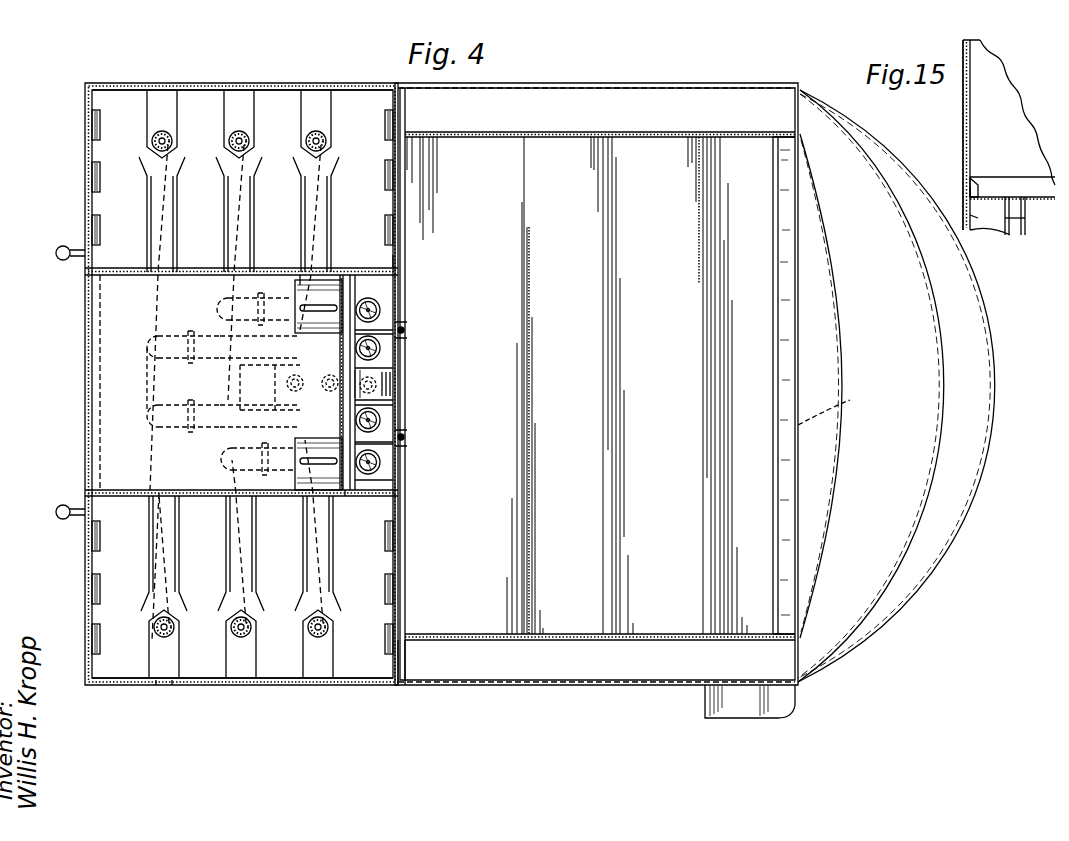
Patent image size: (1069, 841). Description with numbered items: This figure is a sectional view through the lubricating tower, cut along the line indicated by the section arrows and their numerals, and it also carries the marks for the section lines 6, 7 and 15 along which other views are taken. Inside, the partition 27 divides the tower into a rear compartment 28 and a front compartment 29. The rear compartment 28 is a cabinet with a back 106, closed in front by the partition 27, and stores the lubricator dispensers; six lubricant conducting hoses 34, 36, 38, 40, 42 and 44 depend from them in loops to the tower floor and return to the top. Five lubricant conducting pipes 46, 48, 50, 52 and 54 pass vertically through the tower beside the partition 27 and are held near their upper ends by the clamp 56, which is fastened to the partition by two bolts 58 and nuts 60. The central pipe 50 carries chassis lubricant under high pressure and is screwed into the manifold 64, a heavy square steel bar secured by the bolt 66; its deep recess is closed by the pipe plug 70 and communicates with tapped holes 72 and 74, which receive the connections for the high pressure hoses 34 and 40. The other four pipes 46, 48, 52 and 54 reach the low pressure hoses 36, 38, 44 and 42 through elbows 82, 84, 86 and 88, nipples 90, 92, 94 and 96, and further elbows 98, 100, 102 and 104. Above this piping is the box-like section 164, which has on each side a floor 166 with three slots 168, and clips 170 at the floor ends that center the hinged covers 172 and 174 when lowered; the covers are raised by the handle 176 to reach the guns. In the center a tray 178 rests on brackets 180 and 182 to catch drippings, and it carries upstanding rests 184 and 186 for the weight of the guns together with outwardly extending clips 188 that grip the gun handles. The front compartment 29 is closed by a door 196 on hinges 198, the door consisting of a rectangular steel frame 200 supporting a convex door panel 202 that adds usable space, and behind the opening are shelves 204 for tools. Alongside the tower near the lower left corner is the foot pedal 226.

In FIG. 4, the section line 6- 6 is at (251, 735).
In FIG. 4, the section line 7- 7 is at (500, 385).
In FIG. 4, the section line 15- 15 is at (140, 175).
In FIG. 4, the partition 27 is at (403, 262).
In FIG. 4, the rear compartment 28 is at (365, 685).
In FIG. 4, the front compartment 29 is at (460, 680).
In FIG. 4, the lubricant conducting hose 34 is at (325, 137).
In FIG. 4, the lubricant conducting hose 36 is at (248, 137).
In FIG. 4, the lubricant conducting hose 38 is at (172, 137).
In FIG. 4, the lubricant conducting hose 40 is at (309, 630).
In FIG. 4, the lubricant conducting hose 42 is at (232, 630).
In FIG. 4, the lubricant conducting hose 44 is at (155, 630).
In FIG. 4, the lubricant conducting pipe 46 is at (403, 297).
In FIG. 4, the lubricant conducting pipe 48 is at (406, 349).
In FIG. 4, the central pipe 50 is at (406, 422).
In FIG. 4, the lubricant conducting pipe 52 is at (406, 436).
In FIG. 4, the lubricant conducting pipe 54 is at (406, 468).
In FIG. 4, the clamp 56 is at (403, 384).
In FIG. 4, the bolt 58 is at (406, 331).
In FIG. 4, the nut 60 is at (405, 328).
In FIG. 4, the manifold 64 is at (385, 374).
In FIG. 4, the bolt 66 is at (395, 395).
In FIG. 4, the pipe plug 70 is at (271, 395).
In FIG. 4, the tapped hole 72 is at (304, 400).
In FIG. 4, the tapped hole 74 is at (338, 401).
In FIG. 4, the elbow 82 is at (380, 308).
In FIG. 4, the elbow 84 is at (380, 346).
In FIG. 4, the elbow 86 is at (380, 428).
In FIG. 4, the elbow 88 is at (380, 467).
In FIG. 4, the nipple 90 is at (284, 268).
In FIG. 4, the nipple 92 is at (175, 340).
In FIG. 4, the nipple 94 is at (175, 406).
In FIG. 4, the nipple 96 is at (305, 459).
In FIG. 4, the elbow 98 is at (232, 296).
In FIG. 4, the elbow 100 is at (222, 308).
In FIG. 4, the elbow 102 is at (163, 405).
In FIG. 4, the elbow 104 is at (240, 450).
In FIG. 15, the back 106 is at (968, 219).
In FIG. 4, the box-like section 164 is at (120, 438).
In FIG. 15, the box-like section 164 is at (970, 108).
In FIG. 4, the floor 166 is at (140, 125).
In FIG. 15, the floor 166 is at (1040, 172).
In FIG. 4, the slot 168 is at (330, 90).
In FIG. 4, the clip 170 is at (92, 120).
In FIG. 15, the clip 170 is at (975, 180).
In FIG. 4, the hinged cover 172 is at (145, 83).
In FIG. 15, the hinged cover 172 is at (960, 130).
In FIG. 4, the hinged cover 174 is at (210, 685).
In FIG. 15, the hinged cover 174 is at (1015, 217).
In FIG. 4, the handle 176 is at (57, 253).
In FIG. 4, the tray 178 is at (100, 412).
In FIG. 4, the bracket 180 is at (403, 280).
In FIG. 4, the bracket 182 is at (90, 370).
In FIG. 4, the upstanding rest 184 is at (390, 262).
In FIG. 4, the upstanding rest 186 is at (359, 503).
In FIG. 4, the clip 188 is at (150, 240).
In FIG. 4, the door 196 is at (852, 442).
In FIG. 4, the hinge 198 is at (795, 130).
In FIG. 4, the rectangular steel frame 200 is at (846, 410).
In FIG. 4, the convex door panel 202 is at (838, 400).
In FIG. 4, the shelf 204 is at (810, 362).
In FIG. 4, the foot pedal 226 is at (705, 703).